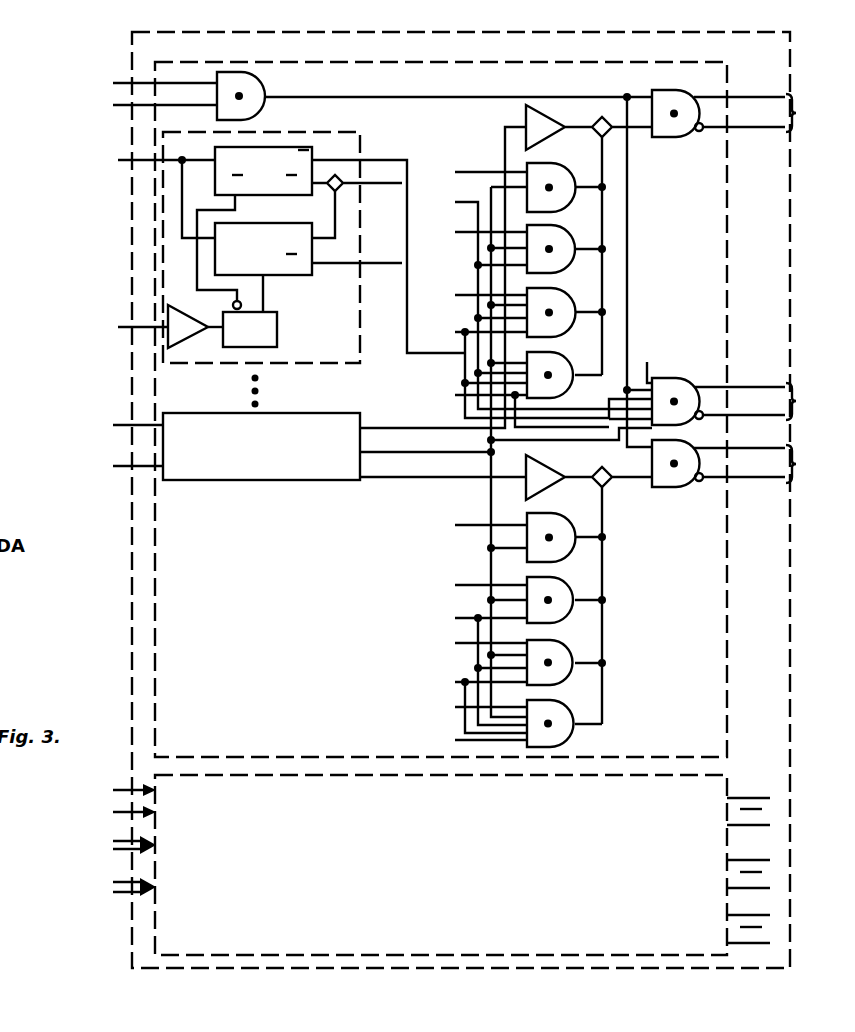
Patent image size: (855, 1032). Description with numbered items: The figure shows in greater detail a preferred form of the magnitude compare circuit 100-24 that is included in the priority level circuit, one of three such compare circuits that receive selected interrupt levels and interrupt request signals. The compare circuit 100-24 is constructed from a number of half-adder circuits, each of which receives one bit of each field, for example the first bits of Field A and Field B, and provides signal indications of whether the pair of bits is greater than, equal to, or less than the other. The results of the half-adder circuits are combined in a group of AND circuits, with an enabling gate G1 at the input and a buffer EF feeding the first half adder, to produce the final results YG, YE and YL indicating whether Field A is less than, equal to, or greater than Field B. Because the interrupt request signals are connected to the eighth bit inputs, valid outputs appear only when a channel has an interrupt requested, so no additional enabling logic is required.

The compare circuit 100-24 is at (755, 54).
The enable AND gate G1 is at (253, 96).
The EF buffer EF is at (188, 326).
The A less than B output gate YG is at (762, 108).
The A equals B output gate YE is at (760, 398).
The A greater than B output gate YL is at (760, 460).